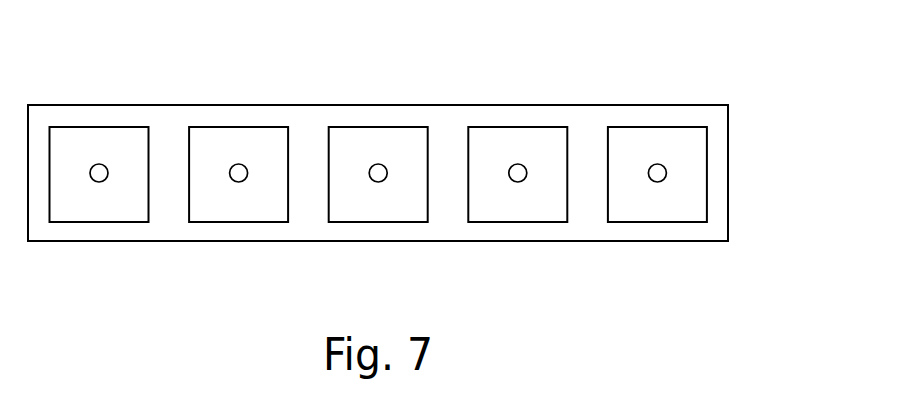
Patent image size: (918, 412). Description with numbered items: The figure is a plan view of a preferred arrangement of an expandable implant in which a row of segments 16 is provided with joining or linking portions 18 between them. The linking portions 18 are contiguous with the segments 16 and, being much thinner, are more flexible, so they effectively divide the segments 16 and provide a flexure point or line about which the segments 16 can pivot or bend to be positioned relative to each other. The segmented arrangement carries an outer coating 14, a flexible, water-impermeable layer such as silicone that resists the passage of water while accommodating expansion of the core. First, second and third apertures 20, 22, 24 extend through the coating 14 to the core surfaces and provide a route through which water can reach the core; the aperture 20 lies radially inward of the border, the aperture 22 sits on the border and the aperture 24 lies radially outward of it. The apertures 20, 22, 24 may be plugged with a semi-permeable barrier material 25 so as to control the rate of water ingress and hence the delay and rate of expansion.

The outer coating 14 is at (720, 233).
The segments 16 is at (98, 131).
The linking portions 18 is at (167, 133).
The first aperture 20 is at (377, 176).
The second aperture 22 is at (238, 176).
The third aperture 24 is at (98, 176).
The semi-permeable barrier material 25 is at (102, 176).